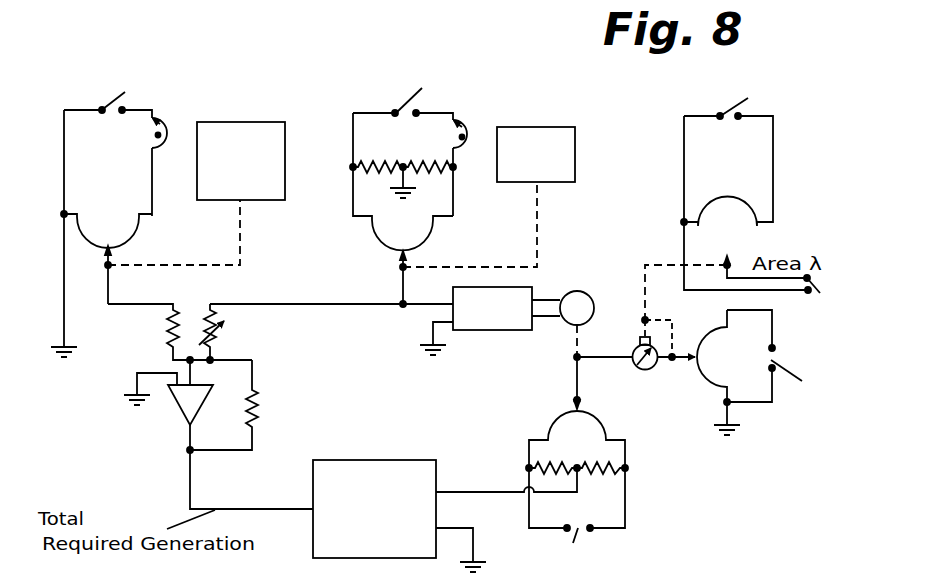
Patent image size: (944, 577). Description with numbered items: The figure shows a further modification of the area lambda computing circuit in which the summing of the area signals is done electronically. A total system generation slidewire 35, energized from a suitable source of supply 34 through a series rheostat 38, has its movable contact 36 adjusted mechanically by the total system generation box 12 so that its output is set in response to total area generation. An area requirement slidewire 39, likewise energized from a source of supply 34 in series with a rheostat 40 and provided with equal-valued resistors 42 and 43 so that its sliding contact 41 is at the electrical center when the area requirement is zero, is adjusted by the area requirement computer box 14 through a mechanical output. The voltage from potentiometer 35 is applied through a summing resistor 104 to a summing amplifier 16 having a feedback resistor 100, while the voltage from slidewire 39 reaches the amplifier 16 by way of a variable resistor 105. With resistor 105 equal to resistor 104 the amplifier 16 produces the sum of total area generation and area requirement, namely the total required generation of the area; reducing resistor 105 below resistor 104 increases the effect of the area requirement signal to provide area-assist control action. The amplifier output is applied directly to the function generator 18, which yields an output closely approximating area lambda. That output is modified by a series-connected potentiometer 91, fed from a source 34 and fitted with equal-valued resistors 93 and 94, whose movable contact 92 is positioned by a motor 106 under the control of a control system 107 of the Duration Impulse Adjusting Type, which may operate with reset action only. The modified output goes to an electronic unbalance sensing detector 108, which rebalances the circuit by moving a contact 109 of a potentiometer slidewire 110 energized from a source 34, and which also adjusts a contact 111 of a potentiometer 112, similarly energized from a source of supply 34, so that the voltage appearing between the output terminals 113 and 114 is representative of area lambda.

The total system generation box 12 is at (238, 122).
The area requirement computer box 14 is at (550, 127).
The summing amplifier 16 is at (183, 415).
The function generator 18 is at (418, 468).
The source of supply 34 is at (457, 316).
The total system generation slidewire 35 is at (85, 232).
The movable contact 36 is at (110, 258).
The series rheostat 38 is at (156, 120).
The area requirement slidewire 39 is at (373, 233).
The rheostat 40 is at (460, 122).
The sliding contact 41 is at (400, 260).
The resistor 42 is at (375, 160).
The resistor 43 is at (421, 161).
The potentiometer 91 is at (557, 420).
The movable contact 92 is at (575, 382).
The resistor 93 is at (547, 464).
The resistor 94 is at (606, 463).
The feedback resistor 100 is at (258, 411).
The summing resistor 104 is at (168, 329).
The variable resistor 105 is at (218, 343).
The motor 106 is at (580, 291).
The control system 107 is at (480, 331).
The electronic unbalance sensing detector 108 is at (641, 371).
The contact 109 is at (672, 363).
The potentiometer slidewire 110 is at (705, 335).
The contact 111 is at (732, 259).
The potentiometer 112 is at (705, 237).
The output terminal 113 is at (820, 293).
The output terminal 114 is at (806, 293).